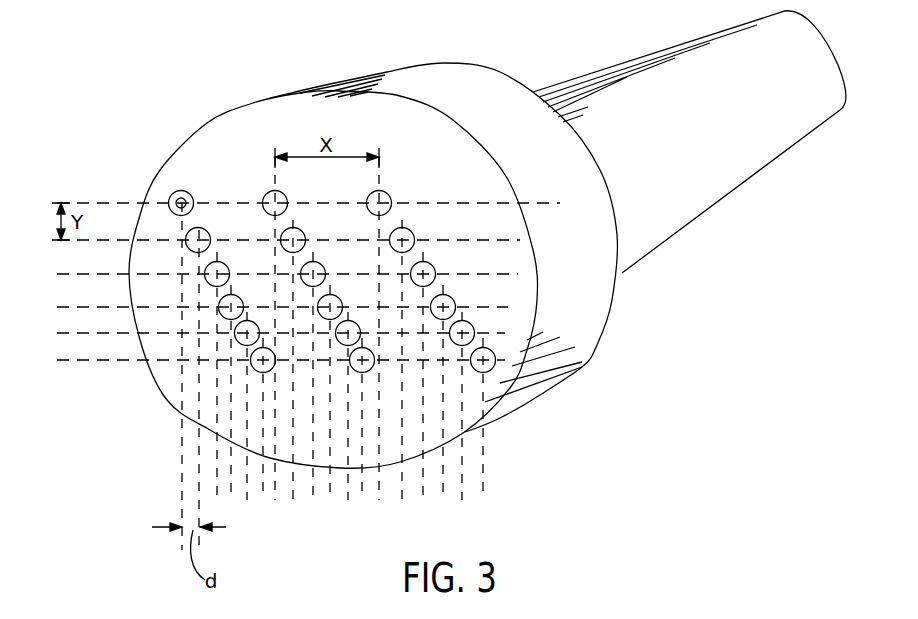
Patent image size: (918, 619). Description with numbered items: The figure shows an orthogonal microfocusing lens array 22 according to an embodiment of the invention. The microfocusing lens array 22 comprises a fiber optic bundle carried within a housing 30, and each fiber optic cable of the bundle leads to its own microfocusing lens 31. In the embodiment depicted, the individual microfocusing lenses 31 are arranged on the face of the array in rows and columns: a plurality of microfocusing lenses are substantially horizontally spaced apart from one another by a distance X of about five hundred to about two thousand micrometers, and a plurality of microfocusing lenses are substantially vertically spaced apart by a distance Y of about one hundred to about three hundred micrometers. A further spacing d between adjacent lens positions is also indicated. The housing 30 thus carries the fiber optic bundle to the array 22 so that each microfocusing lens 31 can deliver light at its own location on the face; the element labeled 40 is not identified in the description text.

The microfocusing lens array 22 is at (383, 77).
The housing 30 is at (693, 220).
The microfocusing lens 31 is at (181, 203).
The face plate 40 is at (495, 386).